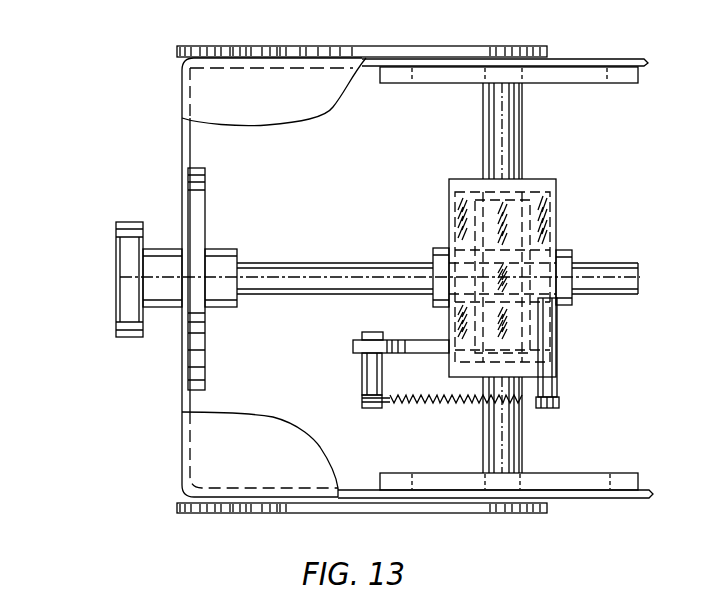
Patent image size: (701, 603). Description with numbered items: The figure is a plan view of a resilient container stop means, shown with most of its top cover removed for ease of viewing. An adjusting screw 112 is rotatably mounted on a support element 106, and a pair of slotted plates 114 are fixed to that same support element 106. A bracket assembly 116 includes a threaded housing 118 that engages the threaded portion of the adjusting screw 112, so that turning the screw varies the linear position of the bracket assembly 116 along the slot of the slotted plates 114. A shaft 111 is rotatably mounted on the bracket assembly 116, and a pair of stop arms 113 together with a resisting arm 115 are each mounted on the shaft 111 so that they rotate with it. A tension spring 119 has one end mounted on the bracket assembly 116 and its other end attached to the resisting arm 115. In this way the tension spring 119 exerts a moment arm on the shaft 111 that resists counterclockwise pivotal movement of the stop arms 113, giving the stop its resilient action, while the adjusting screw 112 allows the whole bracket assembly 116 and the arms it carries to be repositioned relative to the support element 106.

The support element 106 is at (614, 58).
The shaft 111 is at (523, 441).
The adjusting screw 112 is at (116, 290).
The stop arms 113 is at (178, 47).
The slotted plates 114 is at (627, 83).
The resisting arm 115 is at (408, 339).
The bracket assembly 116 is at (558, 213).
The threaded housing 118 is at (573, 252).
The tension spring 119 is at (441, 407).